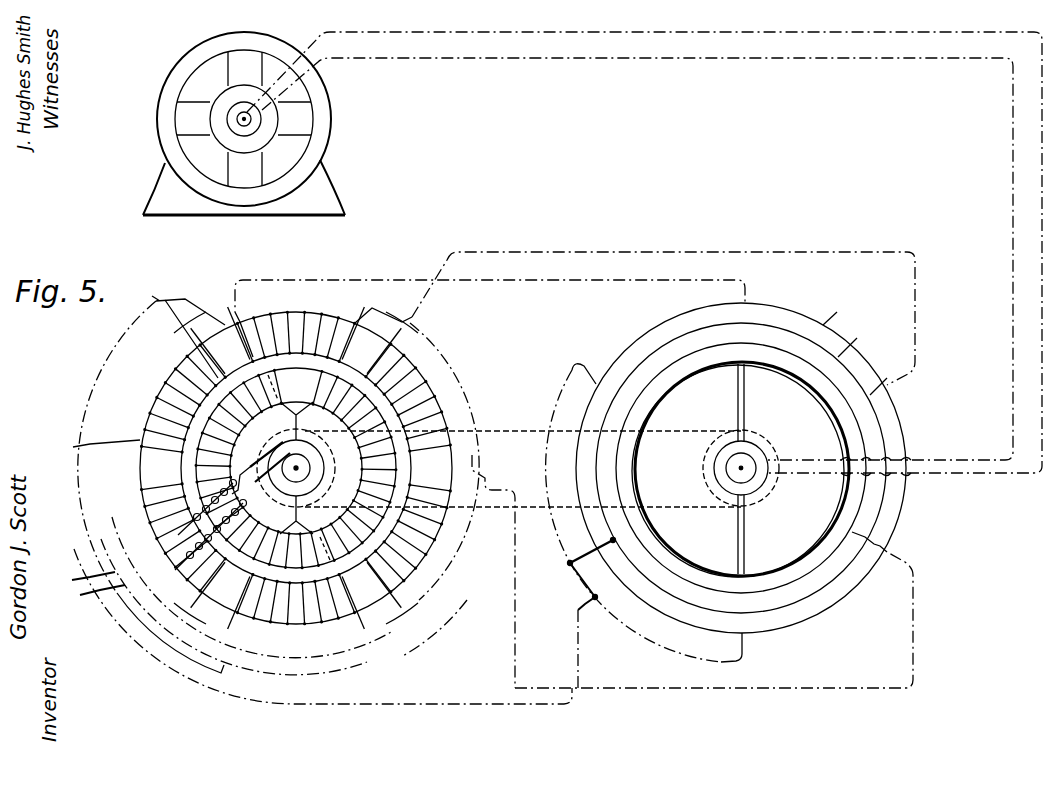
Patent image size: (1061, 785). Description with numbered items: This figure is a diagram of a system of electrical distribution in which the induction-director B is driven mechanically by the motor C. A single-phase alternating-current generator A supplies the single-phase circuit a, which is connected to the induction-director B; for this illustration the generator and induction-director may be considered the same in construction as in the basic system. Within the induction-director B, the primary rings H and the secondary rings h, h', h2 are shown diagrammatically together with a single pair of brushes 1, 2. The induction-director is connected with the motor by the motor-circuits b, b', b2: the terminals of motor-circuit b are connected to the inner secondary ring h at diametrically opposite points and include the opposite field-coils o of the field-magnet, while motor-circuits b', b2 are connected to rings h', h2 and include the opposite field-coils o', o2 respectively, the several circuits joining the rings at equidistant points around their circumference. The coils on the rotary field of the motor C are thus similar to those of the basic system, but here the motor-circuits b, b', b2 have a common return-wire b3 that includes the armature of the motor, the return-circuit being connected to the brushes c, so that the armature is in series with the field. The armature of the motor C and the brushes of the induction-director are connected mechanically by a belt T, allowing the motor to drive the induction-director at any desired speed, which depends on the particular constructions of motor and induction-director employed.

The single-phase alternating-current generator A is at (335, 122).
The single-phase circuit a is at (652, 254).
The induction-director B is at (910, 430).
The primary rings H is at (740, 469).
The brush 1 is at (738, 406).
The brush 2 is at (745, 536).
The inner secondary ring h is at (880, 371).
The secondary ring h' is at (855, 338).
The secondary ring h2 is at (834, 309).
The motor-circuit b is at (714, 610).
The motor-circuit b' is at (635, 306).
The motor-circuit b2 is at (455, 314).
The common return-wire b3 is at (344, 621).
The motor C is at (276, 485).
The brushes c is at (260, 460).
The field-coils o is at (288, 468).
The field-coils o' is at (183, 398).
The field-coils o2 is at (295, 466).
The belt T is at (523, 544).